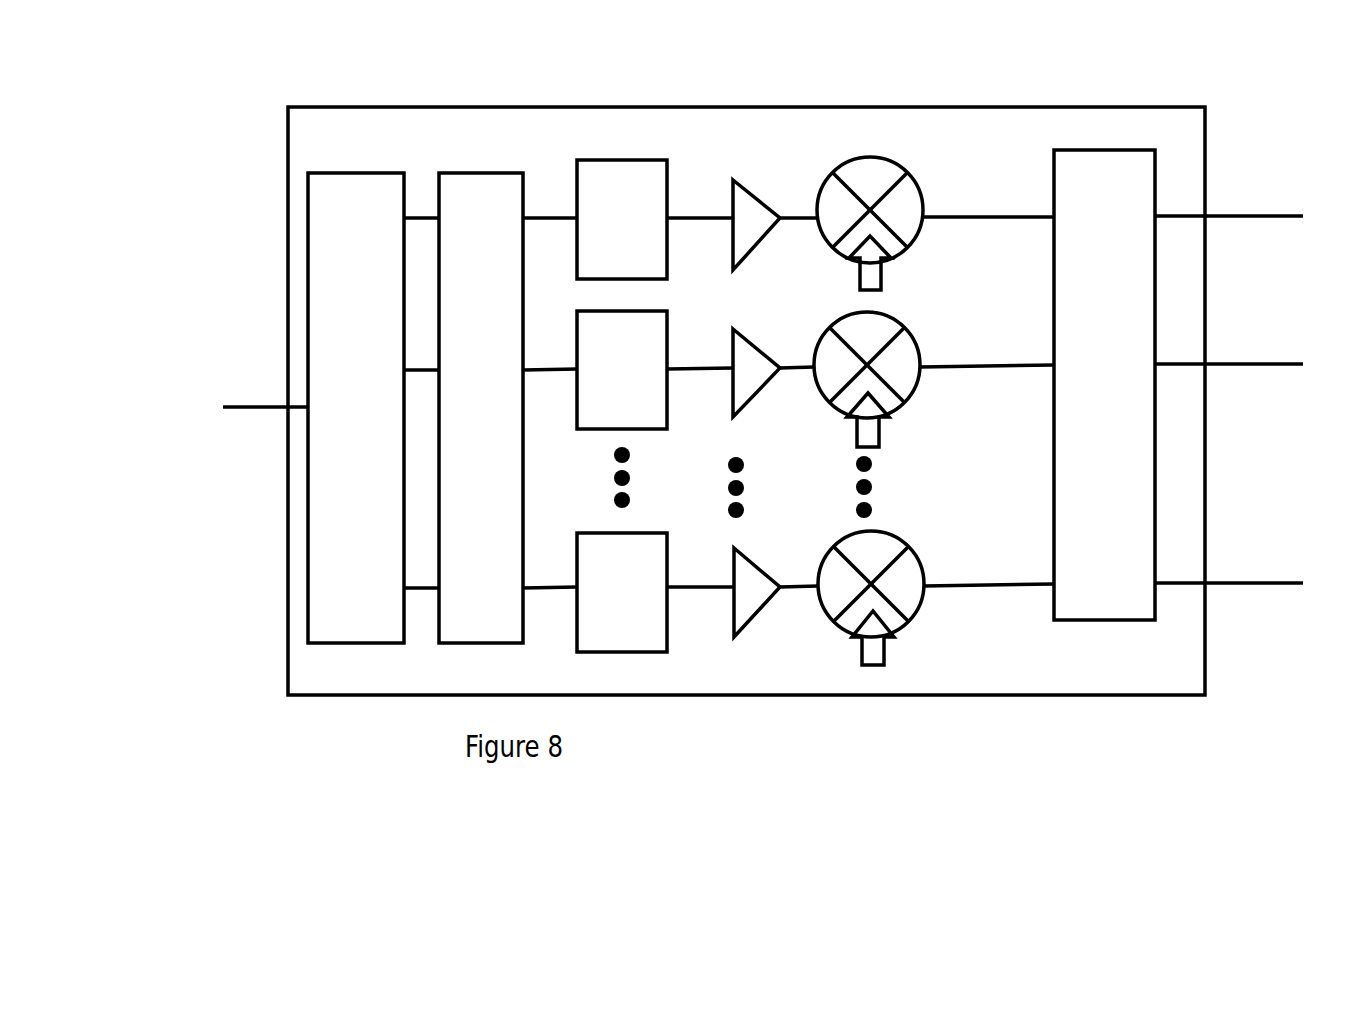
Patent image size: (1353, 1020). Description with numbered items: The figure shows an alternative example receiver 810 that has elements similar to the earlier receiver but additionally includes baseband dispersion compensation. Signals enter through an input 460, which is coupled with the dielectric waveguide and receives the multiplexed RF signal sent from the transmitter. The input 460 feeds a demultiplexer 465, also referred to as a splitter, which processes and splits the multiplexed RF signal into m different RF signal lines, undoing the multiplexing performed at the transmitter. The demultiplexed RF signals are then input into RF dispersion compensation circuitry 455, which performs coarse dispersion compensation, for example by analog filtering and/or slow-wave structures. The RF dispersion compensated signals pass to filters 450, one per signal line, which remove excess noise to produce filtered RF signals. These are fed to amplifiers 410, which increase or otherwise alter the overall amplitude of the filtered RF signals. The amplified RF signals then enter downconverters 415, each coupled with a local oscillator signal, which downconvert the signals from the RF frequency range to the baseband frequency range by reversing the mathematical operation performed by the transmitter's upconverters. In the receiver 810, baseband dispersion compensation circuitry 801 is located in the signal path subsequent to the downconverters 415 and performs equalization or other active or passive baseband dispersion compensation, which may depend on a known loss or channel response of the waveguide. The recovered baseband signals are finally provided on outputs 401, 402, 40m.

The receiver 810 is at (675, 708).
The input 460 is at (277, 407).
The demultiplexer 465 is at (356, 408).
The RF dispersion compensation circuitry 455 is at (481, 408).
The filter 450 is at (622, 406).
The amplifier 410 is at (753, 190).
The downconverter 415 is at (905, 165).
The baseband dispersion compensation circuitry 801 is at (1104, 385).
The output 401 is at (1253, 216).
The output 402 is at (1253, 364).
The output 40m is at (1258, 583).